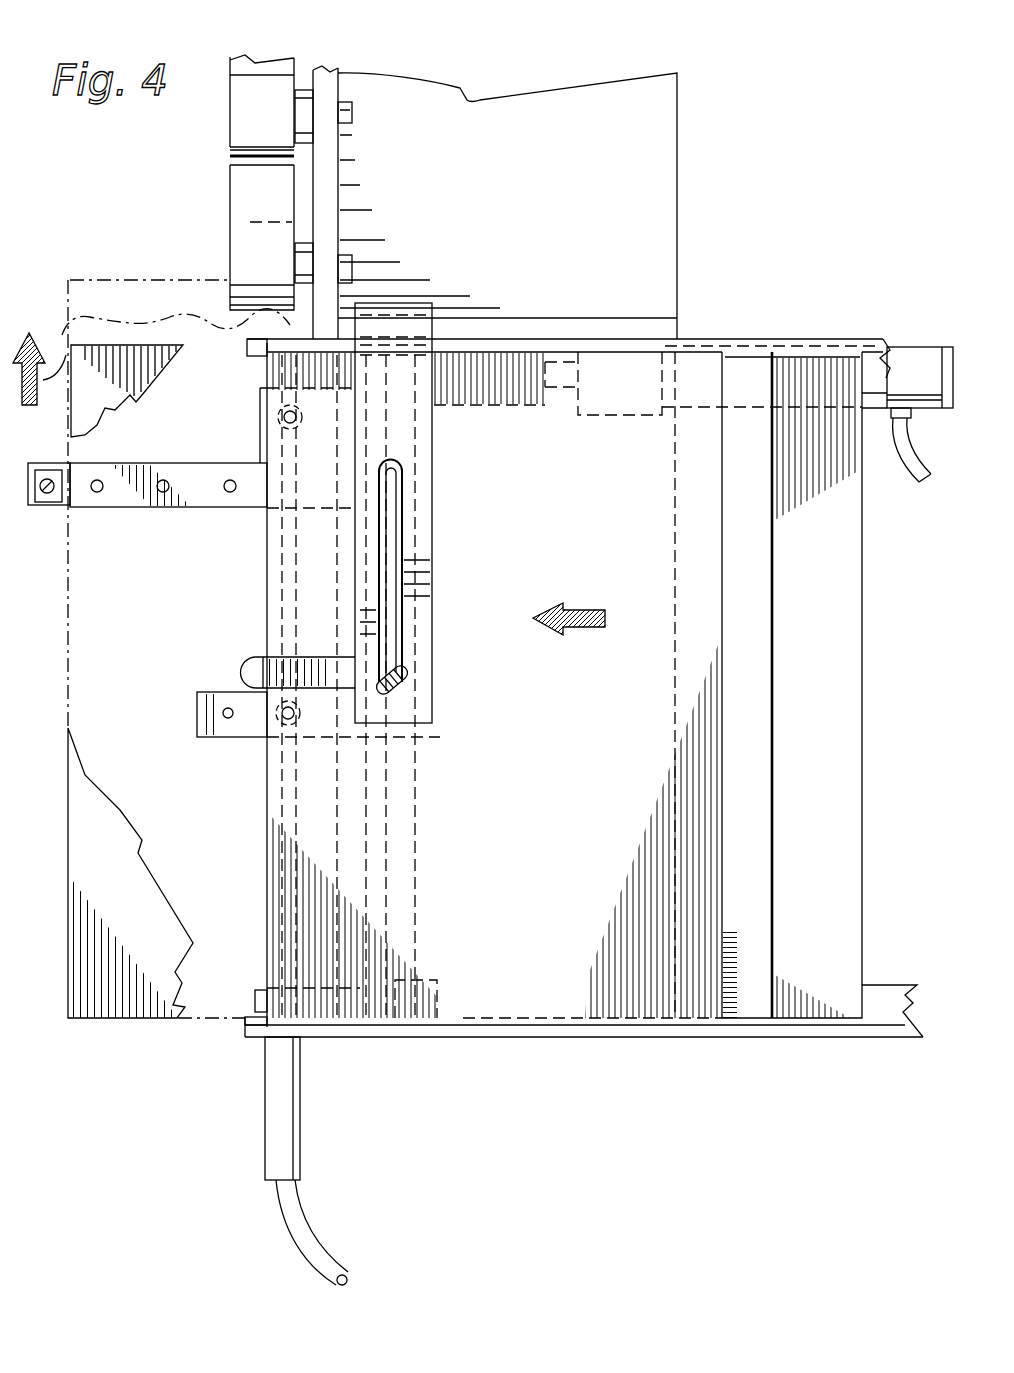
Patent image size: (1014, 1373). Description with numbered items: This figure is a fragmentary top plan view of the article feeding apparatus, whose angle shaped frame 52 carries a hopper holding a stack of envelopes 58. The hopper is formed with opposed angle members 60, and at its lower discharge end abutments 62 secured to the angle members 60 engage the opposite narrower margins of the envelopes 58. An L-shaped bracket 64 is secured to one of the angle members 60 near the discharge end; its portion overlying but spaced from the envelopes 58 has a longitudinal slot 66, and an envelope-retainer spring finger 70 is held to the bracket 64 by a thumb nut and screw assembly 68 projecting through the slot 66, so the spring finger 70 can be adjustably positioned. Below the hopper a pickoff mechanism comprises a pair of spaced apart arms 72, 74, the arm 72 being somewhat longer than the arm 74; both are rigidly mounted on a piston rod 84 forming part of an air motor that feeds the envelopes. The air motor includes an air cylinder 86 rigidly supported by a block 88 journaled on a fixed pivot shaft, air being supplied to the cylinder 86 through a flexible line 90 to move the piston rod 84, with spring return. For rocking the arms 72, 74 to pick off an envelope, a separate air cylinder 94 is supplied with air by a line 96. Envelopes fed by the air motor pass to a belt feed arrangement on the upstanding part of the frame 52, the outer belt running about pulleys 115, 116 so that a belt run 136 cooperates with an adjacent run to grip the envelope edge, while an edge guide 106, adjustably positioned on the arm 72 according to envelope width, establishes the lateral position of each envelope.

The angle shaped frame 52 is at (327, 192).
The envelopes 58 is at (66, 765).
The angle members 60 is at (820, 288).
The abutments 62 is at (258, 358).
The bracket 64 is at (433, 453).
The longitudinal slot 66 is at (400, 555).
The thumb nut and screw assembly 68 is at (405, 673).
The envelope-retainer spring finger 70 is at (240, 660).
The arm 72 is at (168, 510).
The arm 74 is at (235, 740).
The piston rod 84 is at (280, 890).
The air cylinder 86 is at (268, 1113).
The block 88 is at (255, 993).
The flexible line 90 is at (285, 1218).
The air cylinder 94 is at (917, 355).
The line 96 is at (910, 480).
The edge guide 106 is at (52, 505).
The pulley 115 is at (228, 122).
The pulley 116 is at (243, 222).
The belt run 136 is at (237, 172).